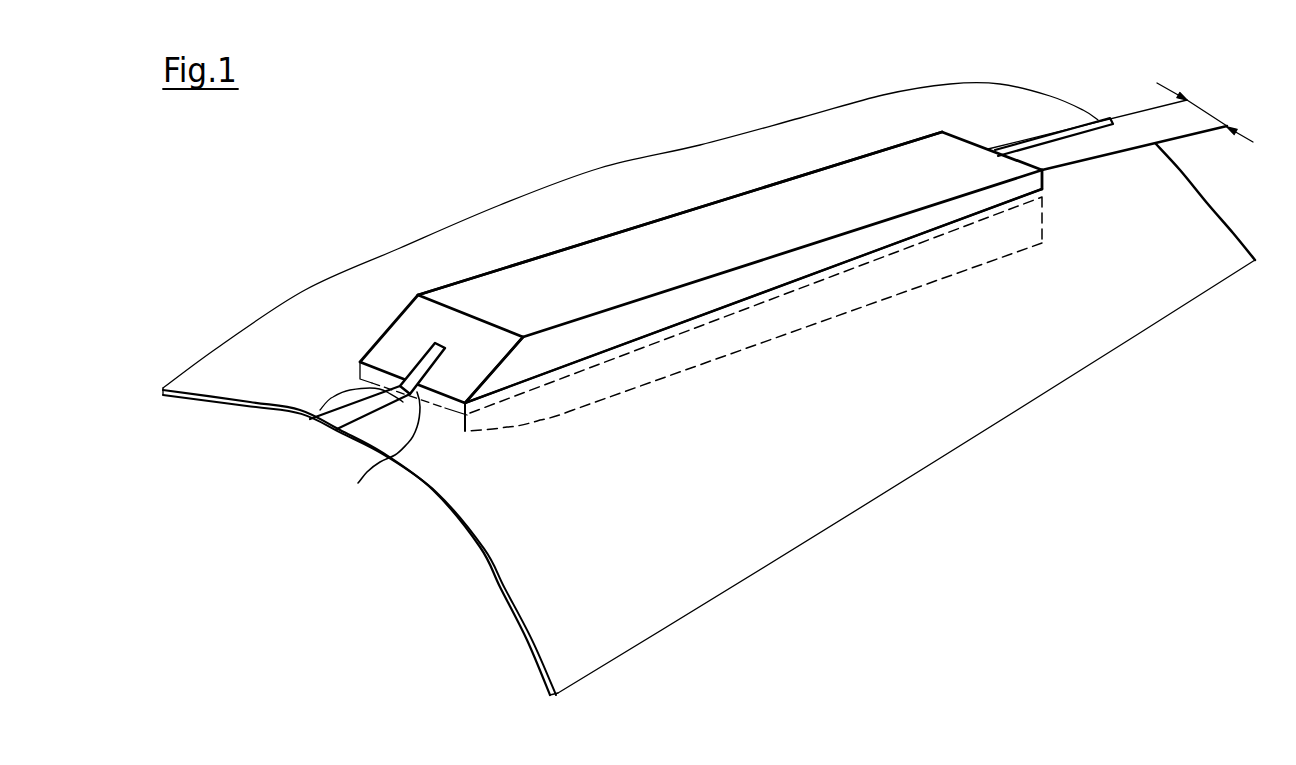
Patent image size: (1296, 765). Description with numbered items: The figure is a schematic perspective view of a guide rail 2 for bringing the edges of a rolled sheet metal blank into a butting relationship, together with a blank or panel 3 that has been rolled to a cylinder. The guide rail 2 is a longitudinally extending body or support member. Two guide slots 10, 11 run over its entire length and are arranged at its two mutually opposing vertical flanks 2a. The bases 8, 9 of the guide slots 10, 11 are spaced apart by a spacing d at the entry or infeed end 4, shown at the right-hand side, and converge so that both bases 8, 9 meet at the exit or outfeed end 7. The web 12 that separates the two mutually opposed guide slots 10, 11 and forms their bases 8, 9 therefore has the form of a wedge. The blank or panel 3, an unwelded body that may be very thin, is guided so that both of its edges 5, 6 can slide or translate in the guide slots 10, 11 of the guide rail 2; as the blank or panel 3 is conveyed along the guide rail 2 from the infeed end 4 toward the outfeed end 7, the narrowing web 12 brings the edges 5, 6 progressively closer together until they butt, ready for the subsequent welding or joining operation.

The guide rail 2 is at (562, 297).
The vertical flanks 2a is at (500, 272).
The blank or panel 3 is at (502, 592).
The entry or infeed end 4 is at (1043, 218).
The blank or panel edge 5 is at (1082, 130).
The blank or panel edge 6 is at (1123, 154).
The exit or outfeed end 7 is at (390, 328).
The base of guide slot 8 is at (313, 418).
The base of guide slot 9 is at (379, 449).
The guide slot 10 is at (363, 378).
The guide slot 11 is at (613, 350).
The web 12 is at (433, 367).
The spacing d is at (1205, 112).